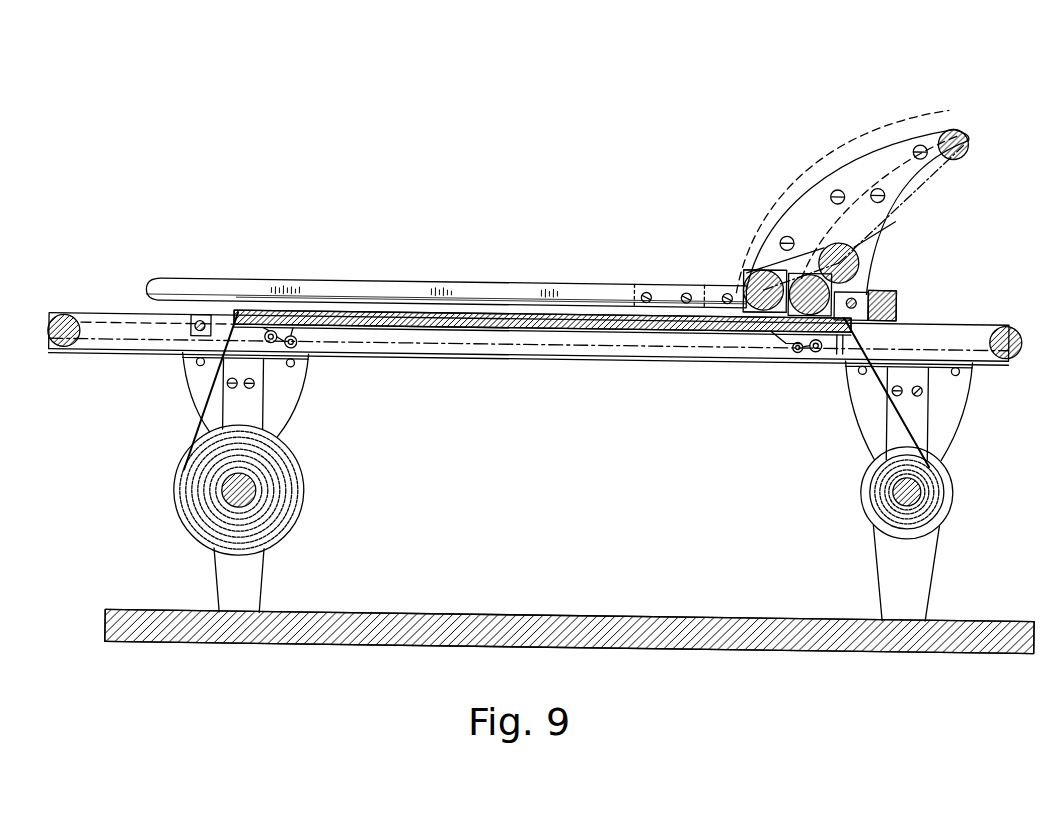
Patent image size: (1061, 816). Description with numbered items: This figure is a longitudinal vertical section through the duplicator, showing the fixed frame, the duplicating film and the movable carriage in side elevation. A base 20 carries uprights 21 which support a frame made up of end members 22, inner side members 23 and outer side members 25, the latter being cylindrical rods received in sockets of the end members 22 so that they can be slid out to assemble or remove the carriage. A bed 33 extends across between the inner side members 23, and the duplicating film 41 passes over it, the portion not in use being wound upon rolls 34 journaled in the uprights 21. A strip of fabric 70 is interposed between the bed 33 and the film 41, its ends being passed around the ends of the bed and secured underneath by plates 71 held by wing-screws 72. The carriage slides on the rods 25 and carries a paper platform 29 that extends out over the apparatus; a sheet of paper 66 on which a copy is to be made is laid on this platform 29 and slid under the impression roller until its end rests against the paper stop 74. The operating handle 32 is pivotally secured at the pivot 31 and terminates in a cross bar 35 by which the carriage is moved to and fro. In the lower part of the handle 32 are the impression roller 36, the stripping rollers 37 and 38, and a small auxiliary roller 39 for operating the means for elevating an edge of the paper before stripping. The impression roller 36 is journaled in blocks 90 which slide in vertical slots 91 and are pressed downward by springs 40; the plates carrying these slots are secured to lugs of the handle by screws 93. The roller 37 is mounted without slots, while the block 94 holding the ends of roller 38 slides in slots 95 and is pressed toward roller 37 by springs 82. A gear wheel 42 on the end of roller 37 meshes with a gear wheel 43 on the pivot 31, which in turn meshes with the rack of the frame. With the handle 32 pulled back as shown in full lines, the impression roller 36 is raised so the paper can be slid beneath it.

The base 20 is at (478, 617).
The uprights 21 is at (281, 406).
The end members 22 is at (46, 340).
The inner side members 23 is at (598, 355).
The outer side members 25 is at (544, 348).
The platform 29 is at (364, 293).
The pivot 31 is at (857, 296).
The operating handle 32 is at (798, 215).
The bed 33 is at (503, 329).
The rolls 34 is at (196, 521).
The cross bar 35 is at (967, 138).
The impression roller 36 is at (746, 282).
The stripping roller 37 is at (792, 283).
The stripping roller 38 is at (858, 272).
The auxiliary roller 39 is at (777, 330).
The springs 40 is at (841, 240).
The duplicating film 41 is at (192, 437).
The gear wheel 42 is at (838, 352).
The gear wheel 43 is at (898, 289).
The sheet of paper 66 is at (297, 298).
The strip of fabric 70 is at (476, 330).
The plates 71 is at (305, 339).
The wing-screws 72 is at (306, 350).
The paper stop 74 is at (752, 268).
The springs 82 is at (888, 230).
The blocks 90 is at (742, 288).
The vertical slots 91 is at (742, 272).
The screws 93 is at (917, 140).
The block 94 is at (870, 275).
The slots 95 is at (849, 240).